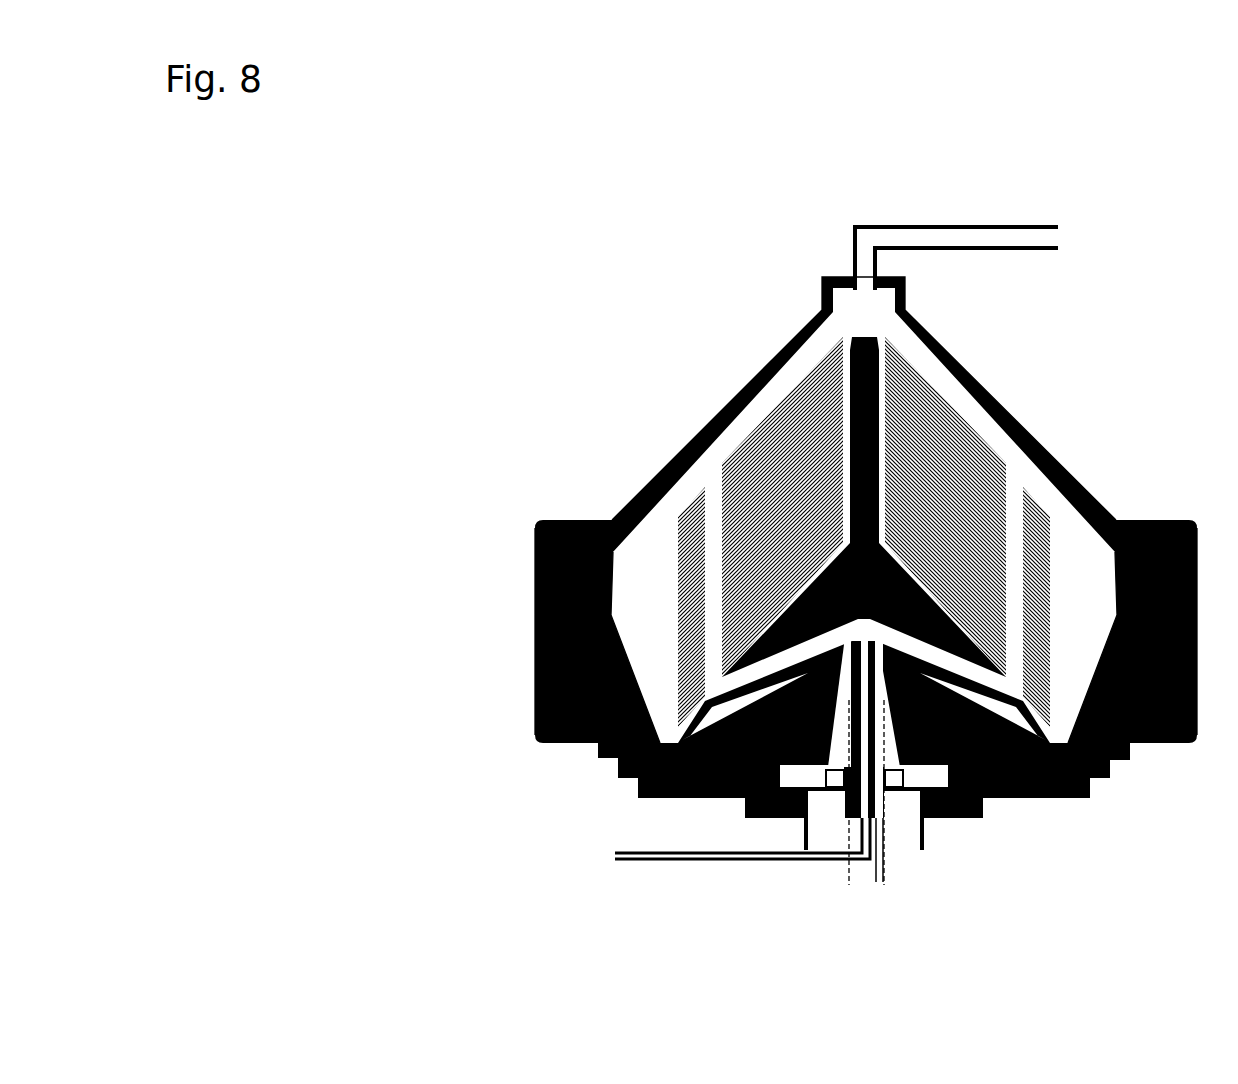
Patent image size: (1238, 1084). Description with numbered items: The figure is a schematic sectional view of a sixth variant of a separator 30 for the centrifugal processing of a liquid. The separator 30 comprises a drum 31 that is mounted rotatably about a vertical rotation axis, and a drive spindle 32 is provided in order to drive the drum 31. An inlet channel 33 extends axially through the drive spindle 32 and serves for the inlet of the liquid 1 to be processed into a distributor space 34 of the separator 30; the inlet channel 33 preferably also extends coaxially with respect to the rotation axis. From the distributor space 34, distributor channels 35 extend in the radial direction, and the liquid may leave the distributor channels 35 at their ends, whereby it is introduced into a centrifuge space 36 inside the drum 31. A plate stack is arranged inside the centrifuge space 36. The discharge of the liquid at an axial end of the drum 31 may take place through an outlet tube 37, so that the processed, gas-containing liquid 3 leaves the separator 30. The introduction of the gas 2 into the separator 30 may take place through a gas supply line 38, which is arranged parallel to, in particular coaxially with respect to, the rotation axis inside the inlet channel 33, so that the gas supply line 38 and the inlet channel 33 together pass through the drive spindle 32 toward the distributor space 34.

The liquid 1 is at (866, 812).
The gas 2 is at (727, 752).
The gas-containing liquid 3 is at (984, 254).
The separator 30 is at (1078, 452).
The drum 31 is at (995, 392).
The drive spindle 32 is at (840, 743).
The inlet channel 33 is at (853, 743).
The distributor space 34 is at (822, 563).
The distributor channels 35 is at (775, 655).
The centrifuge space 36 is at (648, 587).
The outlet tube 37 is at (958, 224).
The gas supply line 38 is at (878, 822).